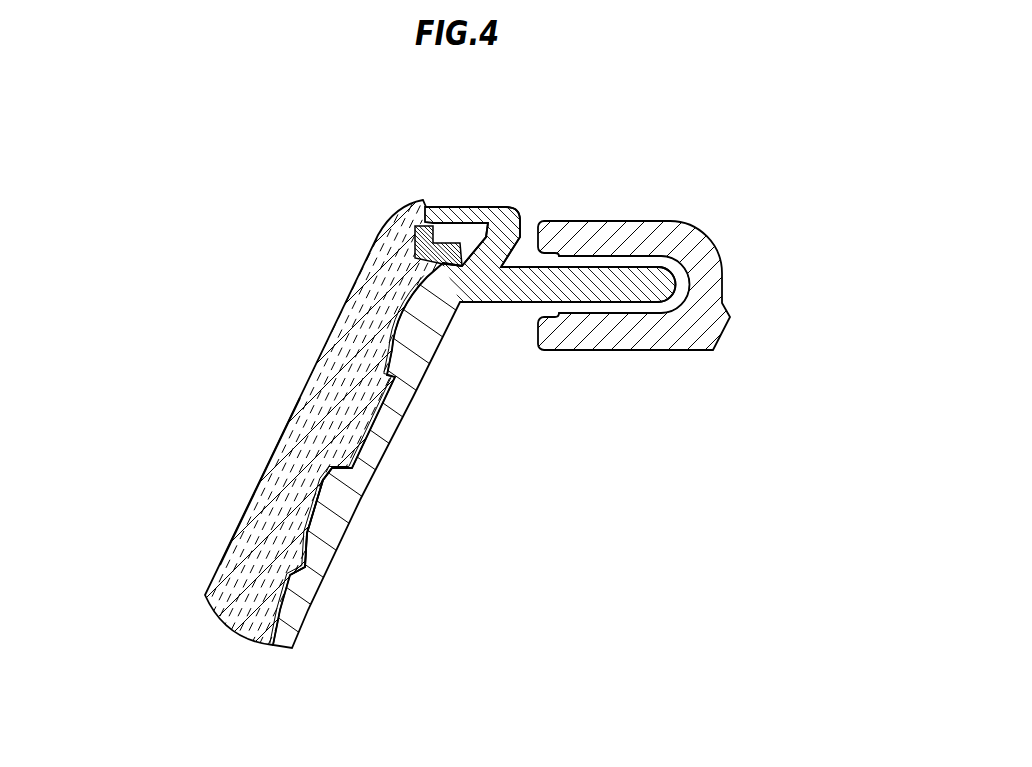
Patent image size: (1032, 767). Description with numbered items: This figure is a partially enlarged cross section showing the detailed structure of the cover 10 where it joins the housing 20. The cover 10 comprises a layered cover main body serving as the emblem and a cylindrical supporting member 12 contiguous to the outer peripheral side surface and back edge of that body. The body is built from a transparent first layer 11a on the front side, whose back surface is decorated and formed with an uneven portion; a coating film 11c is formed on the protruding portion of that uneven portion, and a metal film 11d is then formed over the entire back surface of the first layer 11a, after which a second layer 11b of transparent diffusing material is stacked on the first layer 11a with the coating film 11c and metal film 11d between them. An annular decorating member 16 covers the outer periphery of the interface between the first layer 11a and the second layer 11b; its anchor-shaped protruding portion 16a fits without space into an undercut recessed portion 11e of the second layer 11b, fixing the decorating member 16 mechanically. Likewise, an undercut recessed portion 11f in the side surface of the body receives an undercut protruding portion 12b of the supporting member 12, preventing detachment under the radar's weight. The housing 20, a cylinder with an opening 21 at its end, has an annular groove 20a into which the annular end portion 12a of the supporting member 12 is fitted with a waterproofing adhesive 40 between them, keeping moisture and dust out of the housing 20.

The cover 10 is at (404, 424).
The first layer 11a is at (260, 491).
The second layer 11b is at (327, 557).
The coating film 11c is at (367, 416).
The metal film 11d is at (318, 505).
The recessed portion 11e is at (464, 243).
The recessed portion 11f is at (460, 225).
The supporting member 12 is at (537, 212).
The end portion 12a is at (638, 278).
The protruding portion 12b is at (455, 223).
The decorating member 16 is at (290, 404).
The protruding portion 16a is at (468, 240).
The housing 20 is at (727, 235).
The annular groove 20a is at (602, 318).
The opening 21 is at (560, 350).
The waterproofing adhesive 40 is at (662, 310).